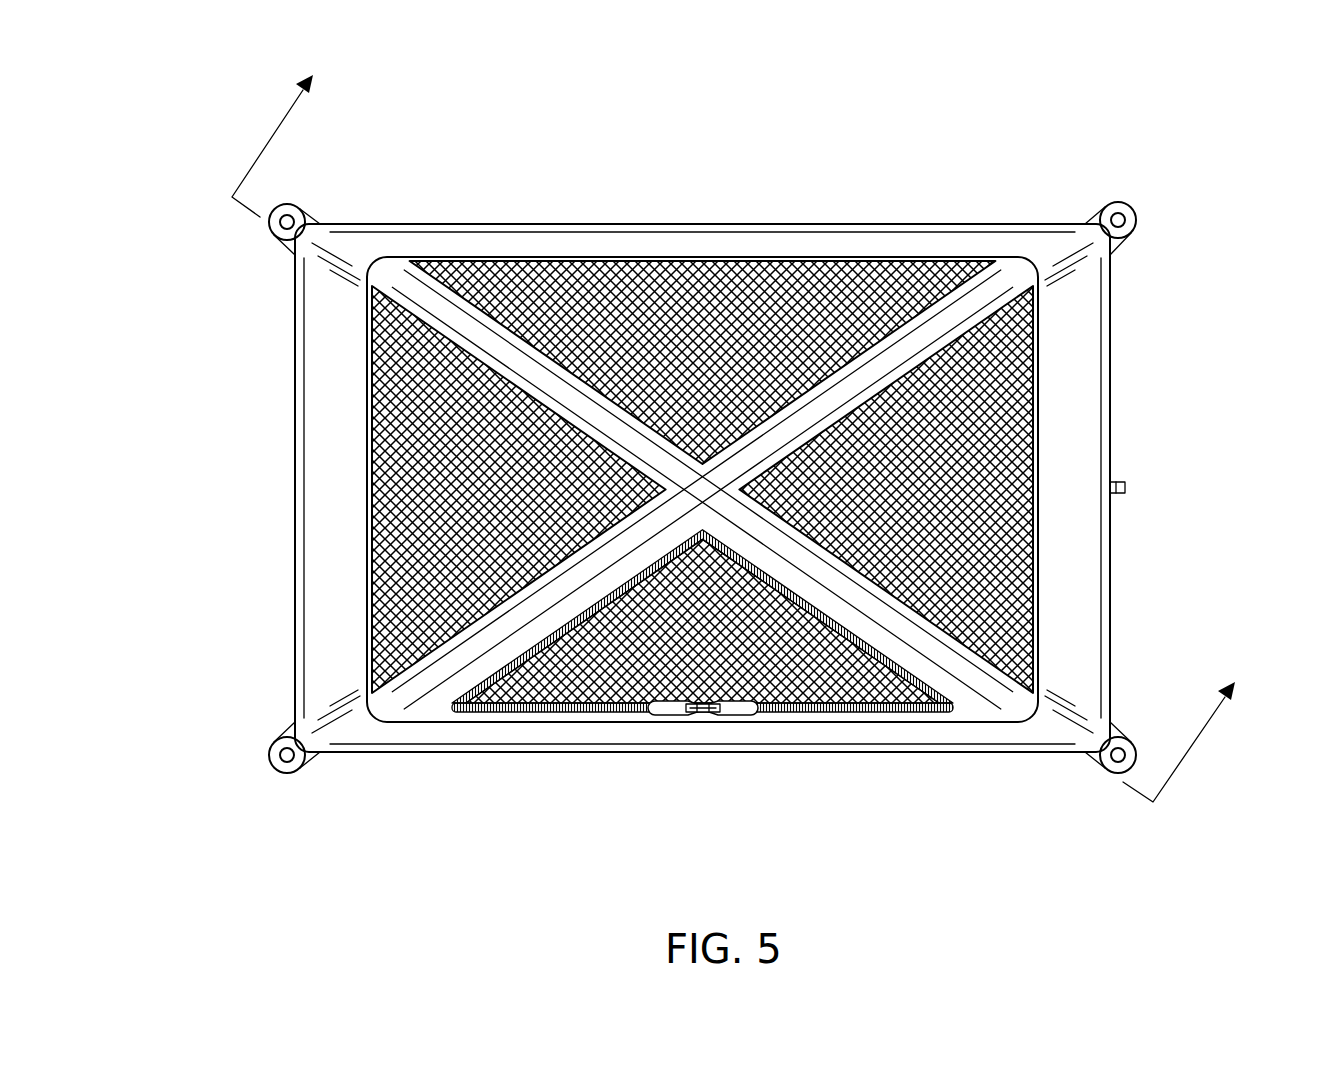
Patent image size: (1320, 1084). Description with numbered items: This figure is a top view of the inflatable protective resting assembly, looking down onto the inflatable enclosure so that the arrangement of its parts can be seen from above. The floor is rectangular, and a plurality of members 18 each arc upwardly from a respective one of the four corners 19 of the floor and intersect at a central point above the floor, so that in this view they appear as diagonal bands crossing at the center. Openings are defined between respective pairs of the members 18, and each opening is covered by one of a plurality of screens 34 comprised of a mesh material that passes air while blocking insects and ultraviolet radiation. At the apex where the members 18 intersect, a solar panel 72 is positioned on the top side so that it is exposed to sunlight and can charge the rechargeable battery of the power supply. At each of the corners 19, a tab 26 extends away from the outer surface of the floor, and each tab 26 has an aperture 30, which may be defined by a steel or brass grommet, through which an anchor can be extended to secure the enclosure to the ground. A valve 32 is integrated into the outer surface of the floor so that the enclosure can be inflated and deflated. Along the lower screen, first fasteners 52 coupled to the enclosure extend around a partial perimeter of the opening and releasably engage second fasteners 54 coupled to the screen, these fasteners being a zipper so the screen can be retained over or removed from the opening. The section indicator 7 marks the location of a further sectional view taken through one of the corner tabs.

The section view arrow 7 is at (733, 434).
The members 18 is at (512, 340).
The corners 19 is at (304, 214).
The tabs 26 is at (298, 206).
The aperture 30 is at (270, 248).
The valve 32 is at (1126, 488).
The screens 34 is at (678, 280).
The first fasteners 52 is at (822, 713).
The second fasteners 54 is at (742, 715).
The solar panel 72 is at (790, 410).